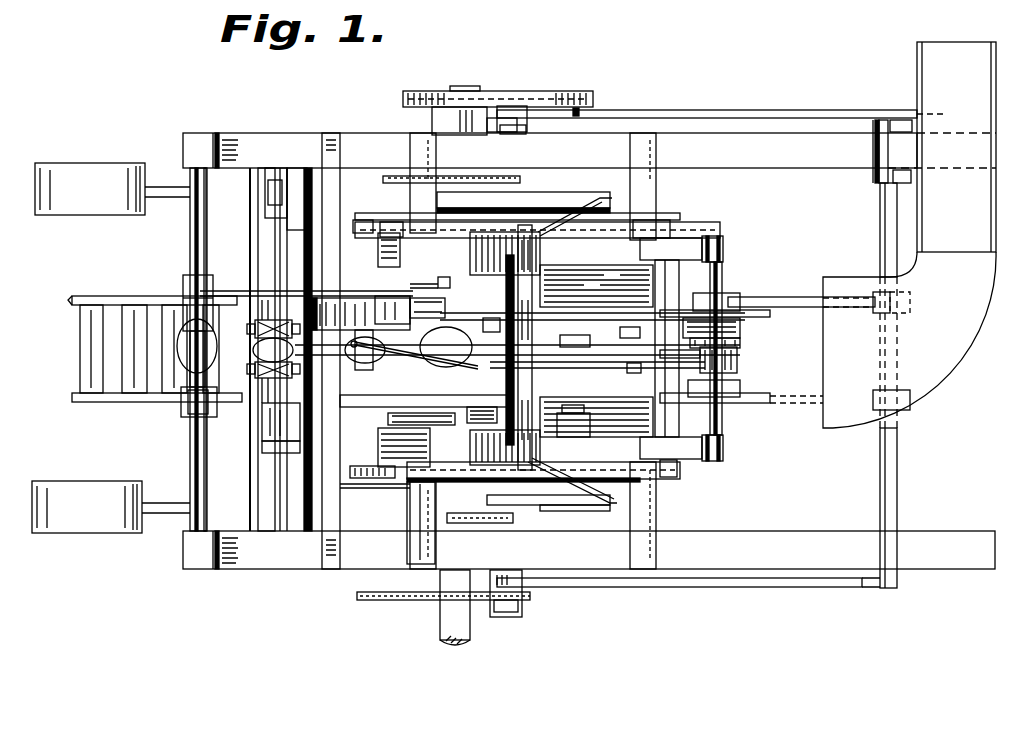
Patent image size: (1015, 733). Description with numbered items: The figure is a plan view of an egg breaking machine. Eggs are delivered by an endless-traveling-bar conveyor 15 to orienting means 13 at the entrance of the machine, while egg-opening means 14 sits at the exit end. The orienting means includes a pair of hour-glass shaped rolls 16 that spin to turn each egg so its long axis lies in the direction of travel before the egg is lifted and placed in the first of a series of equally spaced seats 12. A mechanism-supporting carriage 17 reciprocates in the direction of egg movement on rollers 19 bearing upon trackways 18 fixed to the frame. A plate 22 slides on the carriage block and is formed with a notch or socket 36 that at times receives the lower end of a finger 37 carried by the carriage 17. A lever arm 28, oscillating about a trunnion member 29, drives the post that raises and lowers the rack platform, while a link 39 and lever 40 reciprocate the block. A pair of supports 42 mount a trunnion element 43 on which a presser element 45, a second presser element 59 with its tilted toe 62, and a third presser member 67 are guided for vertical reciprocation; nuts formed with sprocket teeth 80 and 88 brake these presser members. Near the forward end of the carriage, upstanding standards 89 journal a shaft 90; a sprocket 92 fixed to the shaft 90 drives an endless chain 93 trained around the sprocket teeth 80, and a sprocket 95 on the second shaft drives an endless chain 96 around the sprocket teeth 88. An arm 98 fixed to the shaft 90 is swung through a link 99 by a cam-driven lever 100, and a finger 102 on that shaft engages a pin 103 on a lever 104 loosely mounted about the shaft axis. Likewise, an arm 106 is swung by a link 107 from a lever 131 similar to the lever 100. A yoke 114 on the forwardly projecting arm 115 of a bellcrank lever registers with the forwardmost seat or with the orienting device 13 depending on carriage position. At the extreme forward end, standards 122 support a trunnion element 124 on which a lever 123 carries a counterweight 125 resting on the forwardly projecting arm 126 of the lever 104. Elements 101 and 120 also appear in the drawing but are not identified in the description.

The seats 12 is at (555, 368).
The orienting means 13 is at (237, 415).
The egg-opening means 14 is at (766, 288).
The conveyor 15 is at (128, 285).
The rolls 16 is at (271, 326).
The carriage 17 is at (709, 230).
The trackways 18 is at (670, 232).
The rollers 19 is at (643, 220).
The plate 22 is at (650, 266).
The lever arm 28 is at (368, 410).
The trunnion member 29 is at (276, 462).
The notch or socket 36 is at (584, 428).
The finger 37 is at (574, 417).
The link 39 is at (554, 498).
The lever 40 is at (373, 488).
The supports 42 is at (723, 249).
The trunnion element 43 is at (723, 426).
The presser element 45 is at (744, 314).
The second presser element 59 is at (740, 332).
The toe 62 is at (732, 336).
The third presser member 67 is at (675, 331).
The sprocket teeth 80 is at (738, 349).
The sprocket teeth 88 is at (740, 368).
The standards 89 is at (472, 249).
The shaft 90 is at (533, 377).
The sprocket 92 is at (489, 344).
The endless chain 93 is at (596, 344).
The sprocket 95 is at (464, 368).
The endless chain 96 is at (661, 398).
The arm 98 is at (565, 468).
The link 99 is at (586, 504).
The lever 100 is at (530, 526).
The wheel 101 is at (94, 490).
The finger 102 is at (556, 319).
The pin 103 is at (594, 294).
The lever 104 is at (620, 314).
The arm 106 is at (558, 232).
The link 107 is at (580, 205).
The yoke 114 is at (369, 366).
The arm 115 is at (416, 368).
The stop 120 is at (437, 276).
The standards 122 is at (207, 132).
The lever 123 is at (260, 288).
The trunnion element 124 is at (208, 262).
The counterweight 125 is at (384, 299).
The arm 126 is at (422, 312).
The lever 131 is at (535, 196).